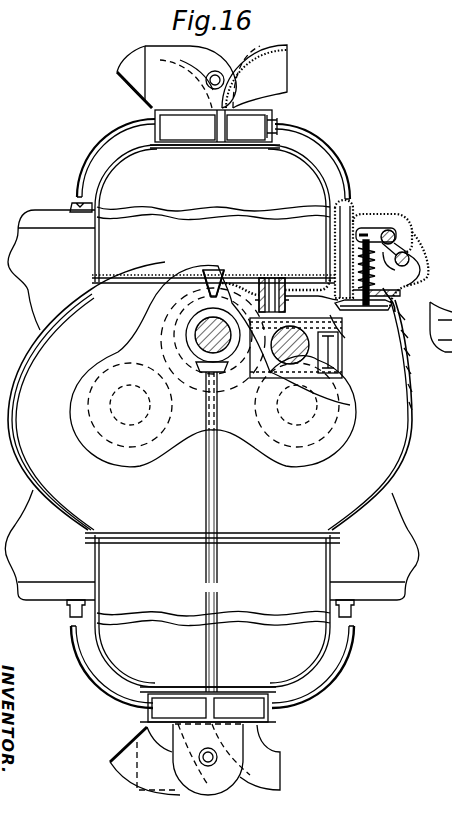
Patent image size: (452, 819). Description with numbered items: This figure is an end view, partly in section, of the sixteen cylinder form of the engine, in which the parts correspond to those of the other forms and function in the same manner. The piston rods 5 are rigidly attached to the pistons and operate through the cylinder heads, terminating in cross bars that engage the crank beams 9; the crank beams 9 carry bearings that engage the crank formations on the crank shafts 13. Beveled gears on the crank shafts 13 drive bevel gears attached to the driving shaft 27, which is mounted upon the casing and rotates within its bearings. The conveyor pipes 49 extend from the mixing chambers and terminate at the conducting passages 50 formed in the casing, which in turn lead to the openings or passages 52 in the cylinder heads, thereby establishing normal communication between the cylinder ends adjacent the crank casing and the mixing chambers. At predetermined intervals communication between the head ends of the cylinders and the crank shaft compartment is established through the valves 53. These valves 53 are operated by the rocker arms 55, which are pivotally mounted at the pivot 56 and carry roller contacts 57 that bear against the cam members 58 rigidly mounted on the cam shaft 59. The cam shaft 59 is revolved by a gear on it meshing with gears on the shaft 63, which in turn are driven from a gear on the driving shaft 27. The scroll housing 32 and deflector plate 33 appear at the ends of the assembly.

The piston rods 5 is at (271, 290).
The crank beams 9 is at (349, 386).
The crank shafts 13 is at (298, 350).
The driving shaft 27 is at (205, 333).
The scroll housing 32 is at (157, 62).
The deflector plate 33 is at (146, 86).
The conveyor pipes 49 is at (323, 144).
The conducting passages 50 is at (346, 236).
The openings or passages 52 is at (320, 298).
The valves 53 is at (345, 338).
The rocker arms 55 is at (372, 225).
The pivot 56 is at (392, 231).
The roller contacts 57 is at (406, 281).
The cam members 58 is at (405, 252).
The cam shaft 59 is at (418, 265).
The shaft 63 is at (205, 488).